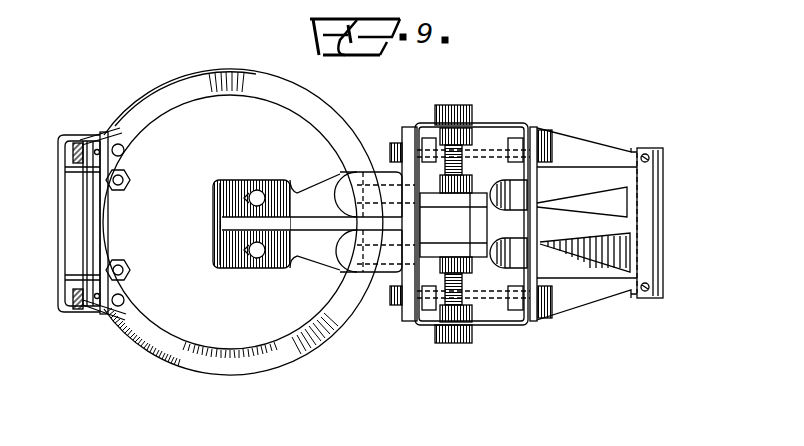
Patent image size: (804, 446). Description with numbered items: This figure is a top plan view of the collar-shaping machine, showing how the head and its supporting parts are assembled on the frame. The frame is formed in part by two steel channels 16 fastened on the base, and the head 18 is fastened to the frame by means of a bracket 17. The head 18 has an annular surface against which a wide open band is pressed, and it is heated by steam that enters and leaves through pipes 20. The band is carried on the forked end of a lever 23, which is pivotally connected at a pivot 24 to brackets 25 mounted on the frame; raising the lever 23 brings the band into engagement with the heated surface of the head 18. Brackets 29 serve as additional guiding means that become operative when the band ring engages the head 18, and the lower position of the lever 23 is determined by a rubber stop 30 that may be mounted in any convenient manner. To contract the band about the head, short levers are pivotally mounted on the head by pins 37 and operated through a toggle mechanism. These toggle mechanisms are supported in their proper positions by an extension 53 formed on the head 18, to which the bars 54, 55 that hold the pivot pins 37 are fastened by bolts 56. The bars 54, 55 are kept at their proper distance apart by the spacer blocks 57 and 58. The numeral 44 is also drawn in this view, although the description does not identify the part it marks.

The steel channels 16 is at (492, 123).
The bracket 17 is at (317, 247).
The head 18 is at (245, 66).
The pipes 20 is at (422, 250).
The lever 23 is at (662, 191).
The pivot 24 is at (644, 150).
The brackets 25 is at (582, 143).
The brackets 29 is at (388, 281).
The rubber stop 30 is at (468, 203).
The pins 37 is at (118, 143).
The block 44 is at (86, 142).
The extension 53 is at (110, 220).
The bar 54 is at (80, 196).
The bar 55 is at (58, 240).
The bolts 56 is at (132, 178).
The spacer block 57 is at (88, 177).
The spacer block 58 is at (68, 218).